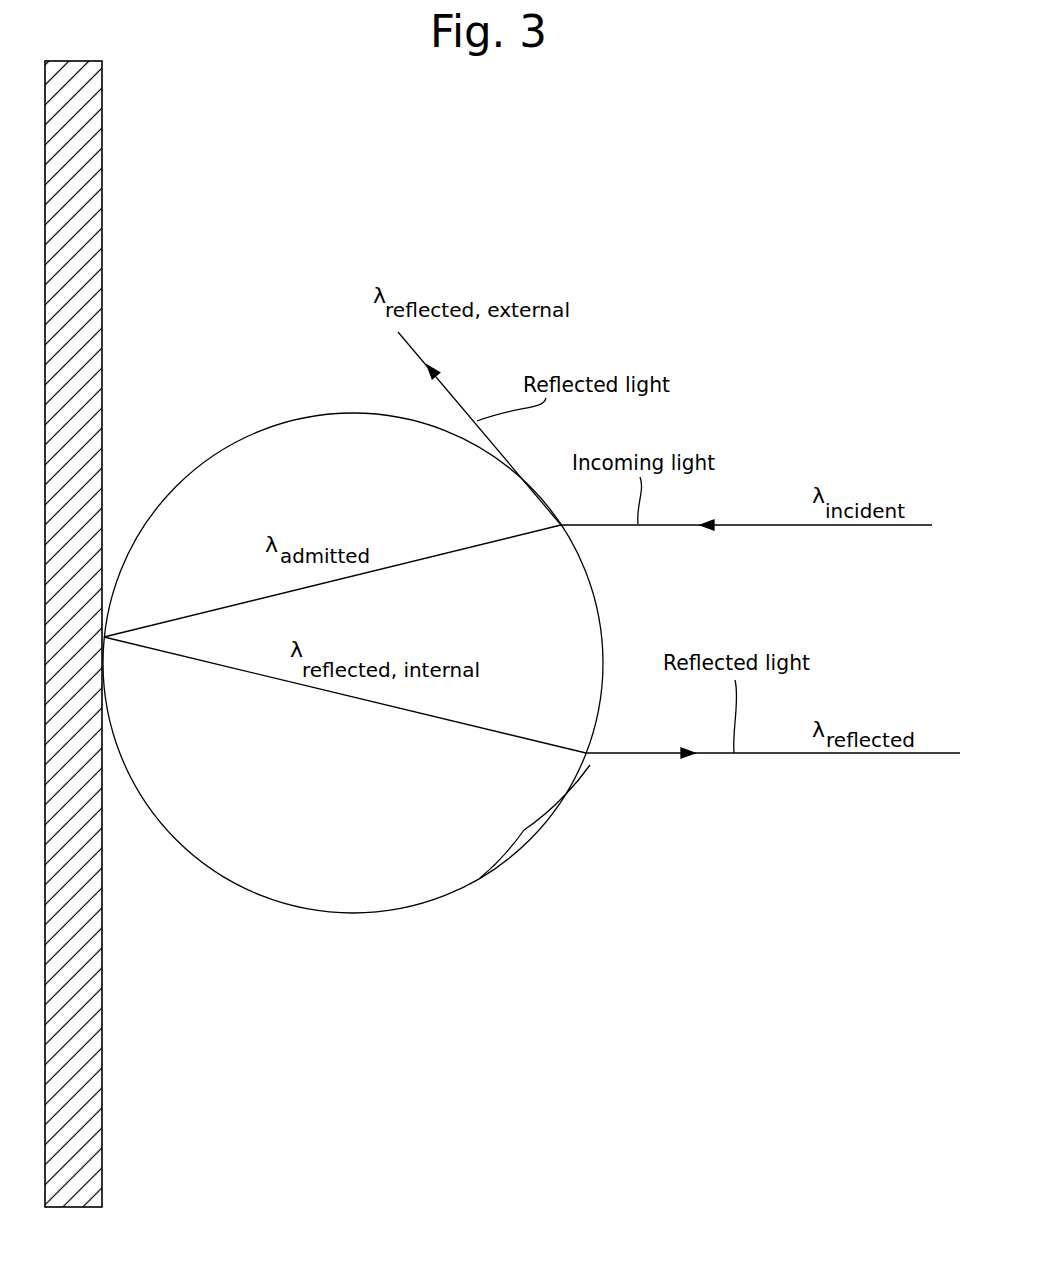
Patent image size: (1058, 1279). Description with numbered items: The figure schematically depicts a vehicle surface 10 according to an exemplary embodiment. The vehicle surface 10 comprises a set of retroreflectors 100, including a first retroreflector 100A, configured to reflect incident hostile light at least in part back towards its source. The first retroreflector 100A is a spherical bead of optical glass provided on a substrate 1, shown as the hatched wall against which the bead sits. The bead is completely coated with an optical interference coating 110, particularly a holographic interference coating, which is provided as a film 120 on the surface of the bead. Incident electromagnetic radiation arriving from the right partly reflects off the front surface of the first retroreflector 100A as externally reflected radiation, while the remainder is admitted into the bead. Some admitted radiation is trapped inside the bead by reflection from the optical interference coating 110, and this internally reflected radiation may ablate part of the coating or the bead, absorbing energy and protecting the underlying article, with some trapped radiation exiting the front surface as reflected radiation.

The substrate 1 is at (102, 1140).
The vehicle surface 10 is at (675, 1057).
The set of retroreflectors 100 is at (661, 930).
The first retroreflector 100A is at (547, 824).
The optical interference coating 110 is at (580, 783).
The film 120 is at (505, 871).